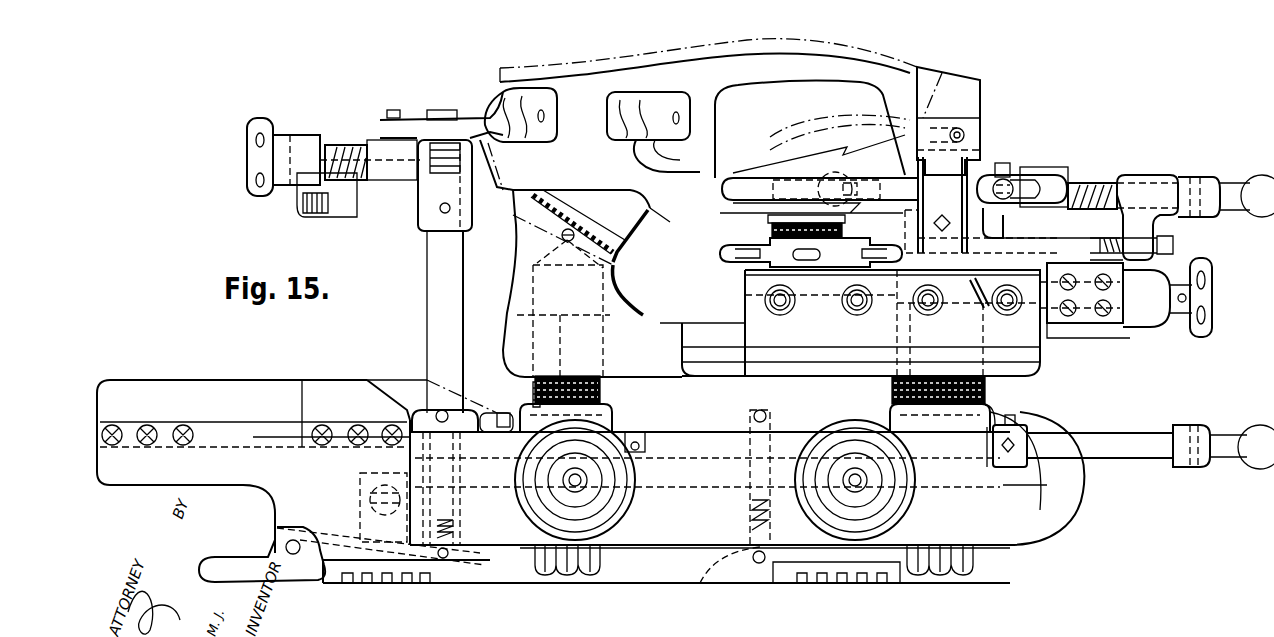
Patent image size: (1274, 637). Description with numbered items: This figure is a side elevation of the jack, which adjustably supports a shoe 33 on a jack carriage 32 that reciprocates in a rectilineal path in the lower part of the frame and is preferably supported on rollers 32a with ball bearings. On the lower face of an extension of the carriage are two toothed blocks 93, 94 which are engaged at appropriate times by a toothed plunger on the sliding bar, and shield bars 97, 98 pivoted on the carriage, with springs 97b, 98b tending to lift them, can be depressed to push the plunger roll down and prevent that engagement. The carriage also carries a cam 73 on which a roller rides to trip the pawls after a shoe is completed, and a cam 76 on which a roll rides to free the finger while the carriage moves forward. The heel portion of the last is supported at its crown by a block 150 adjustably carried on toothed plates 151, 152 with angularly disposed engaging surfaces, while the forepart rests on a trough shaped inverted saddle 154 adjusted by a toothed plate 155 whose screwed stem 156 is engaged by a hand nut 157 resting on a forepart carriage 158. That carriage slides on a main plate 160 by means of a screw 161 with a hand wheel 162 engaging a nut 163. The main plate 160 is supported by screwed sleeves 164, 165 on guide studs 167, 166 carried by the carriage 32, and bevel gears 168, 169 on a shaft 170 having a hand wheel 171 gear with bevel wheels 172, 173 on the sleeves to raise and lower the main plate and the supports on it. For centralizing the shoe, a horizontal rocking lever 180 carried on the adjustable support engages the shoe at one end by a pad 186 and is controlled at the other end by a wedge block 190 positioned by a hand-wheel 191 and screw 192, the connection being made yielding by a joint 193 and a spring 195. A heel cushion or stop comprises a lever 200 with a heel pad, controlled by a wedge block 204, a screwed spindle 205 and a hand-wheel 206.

The shoe 33 is at (708, 52).
The pad 186 is at (660, 121).
The hand-wheel 206 is at (333, 161).
The screwed spindle 205 is at (371, 140).
The wedge block 204 is at (468, 250).
The lever 200 is at (581, 273).
The block 150 is at (608, 226).
The toothed plate 151 is at (593, 235).
The toothed plate 152 is at (615, 272).
The inverted saddle 154 is at (847, 122).
The toothed plate 155 is at (835, 197).
The screwed stem 156 is at (825, 229).
The hand nut 157 is at (796, 256).
The forepart carriage 158 is at (861, 323).
The main plate 160 is at (702, 334).
The screwed sleeve 164 is at (586, 375).
The guide stud 166 is at (961, 391).
The screwed sleeve 165 is at (958, 380).
The guide stud 167 is at (583, 405).
The bevel wheel 173 is at (581, 425).
The jack carriage 32 is at (722, 494).
The bevel gear 169 is at (715, 480).
The rollers 32a is at (754, 580).
The toothed block 93 is at (855, 546).
The toothed block 94 is at (666, 567).
The shield bar 97 is at (753, 517).
The spring 97b is at (718, 584).
The shield bar 98 is at (342, 551).
The spring 98b is at (445, 523).
The cam 76 is at (253, 449).
The cam 73 is at (393, 396).
The bevel gear 168 is at (1007, 463).
The shaft 170 is at (1100, 463).
The hand wheel 171 is at (1223, 464).
The bevel wheel 172 is at (1030, 411).
The horizontal rocking lever 180 is at (982, 205).
The spring 195 is at (1051, 225).
The wedge block 190 is at (1039, 175).
The joint 193 is at (1018, 171).
The screw 192 is at (1109, 177).
The hand-wheel 191 is at (1182, 204).
The nut 163 is at (1085, 312).
The screw 161 is at (1157, 312).
The hand wheel 162 is at (1210, 306).